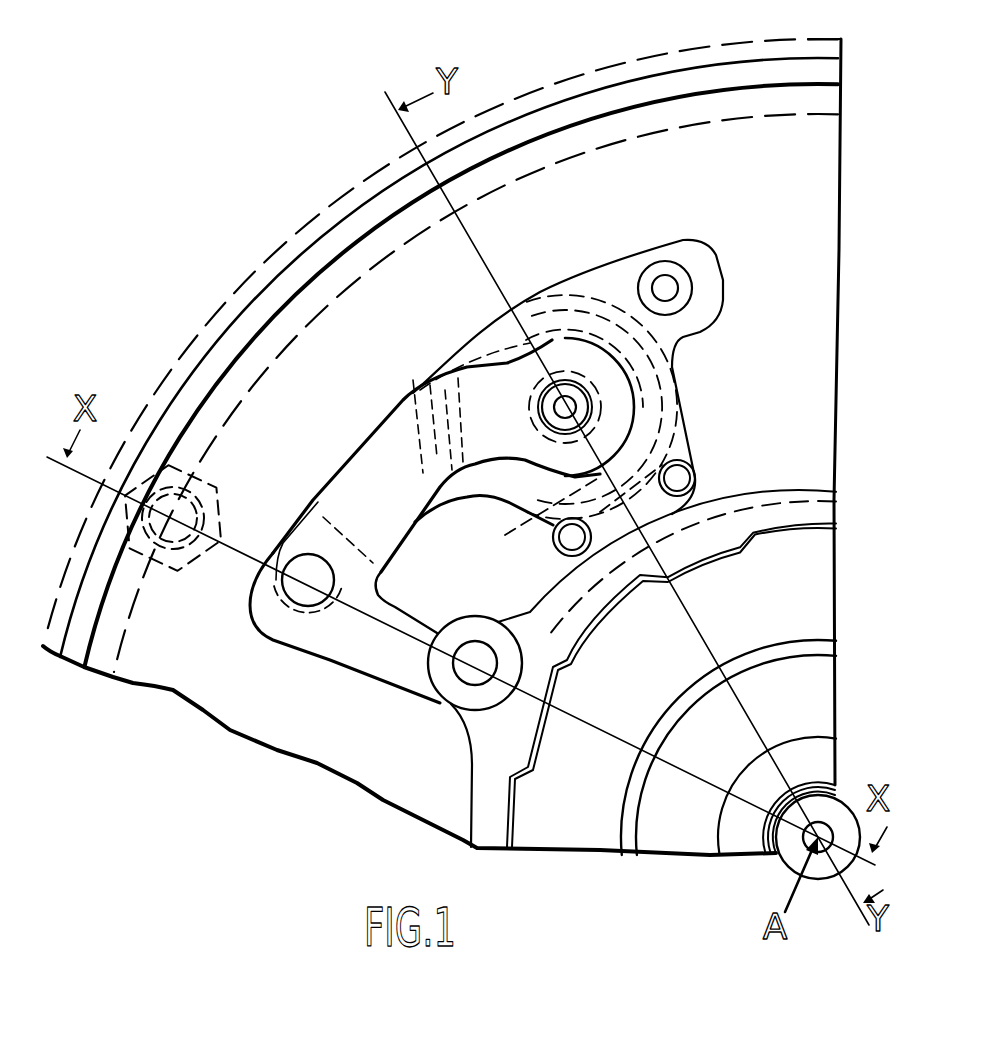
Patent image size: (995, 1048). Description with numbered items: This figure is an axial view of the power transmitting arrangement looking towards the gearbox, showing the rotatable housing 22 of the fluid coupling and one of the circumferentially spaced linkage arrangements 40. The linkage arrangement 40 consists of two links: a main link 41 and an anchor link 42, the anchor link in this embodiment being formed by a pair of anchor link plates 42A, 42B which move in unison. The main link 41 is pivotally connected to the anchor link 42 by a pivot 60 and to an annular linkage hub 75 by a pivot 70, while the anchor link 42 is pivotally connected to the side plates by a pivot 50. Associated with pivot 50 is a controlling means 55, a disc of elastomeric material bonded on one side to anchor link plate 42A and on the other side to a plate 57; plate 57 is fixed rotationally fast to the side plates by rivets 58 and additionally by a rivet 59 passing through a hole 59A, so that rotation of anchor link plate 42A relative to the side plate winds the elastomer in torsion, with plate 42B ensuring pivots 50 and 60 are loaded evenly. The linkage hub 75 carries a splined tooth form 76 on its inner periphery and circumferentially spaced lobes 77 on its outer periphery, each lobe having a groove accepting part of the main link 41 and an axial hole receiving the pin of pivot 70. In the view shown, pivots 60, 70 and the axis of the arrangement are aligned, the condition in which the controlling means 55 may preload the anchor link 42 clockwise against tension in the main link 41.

The rotatable housing 22 is at (628, 94).
The linkage arrangement 40 is at (423, 349).
The main link 41 is at (352, 657).
The anchor link 42 is at (436, 459).
The anchor link plate 42A is at (435, 505).
The anchor link plate 42B is at (393, 413).
The pivot 50 is at (571, 406).
The controlling means 55 is at (692, 409).
The plate 57 is at (720, 315).
The rivets 58 is at (568, 542).
The rivet 59 is at (694, 255).
The hole 59A is at (657, 275).
The pivot 60 is at (296, 582).
The pivot 70 is at (463, 672).
The linkage hub 75 is at (478, 738).
The splined tooth form 76 is at (598, 620).
The lobes 77 is at (448, 655).